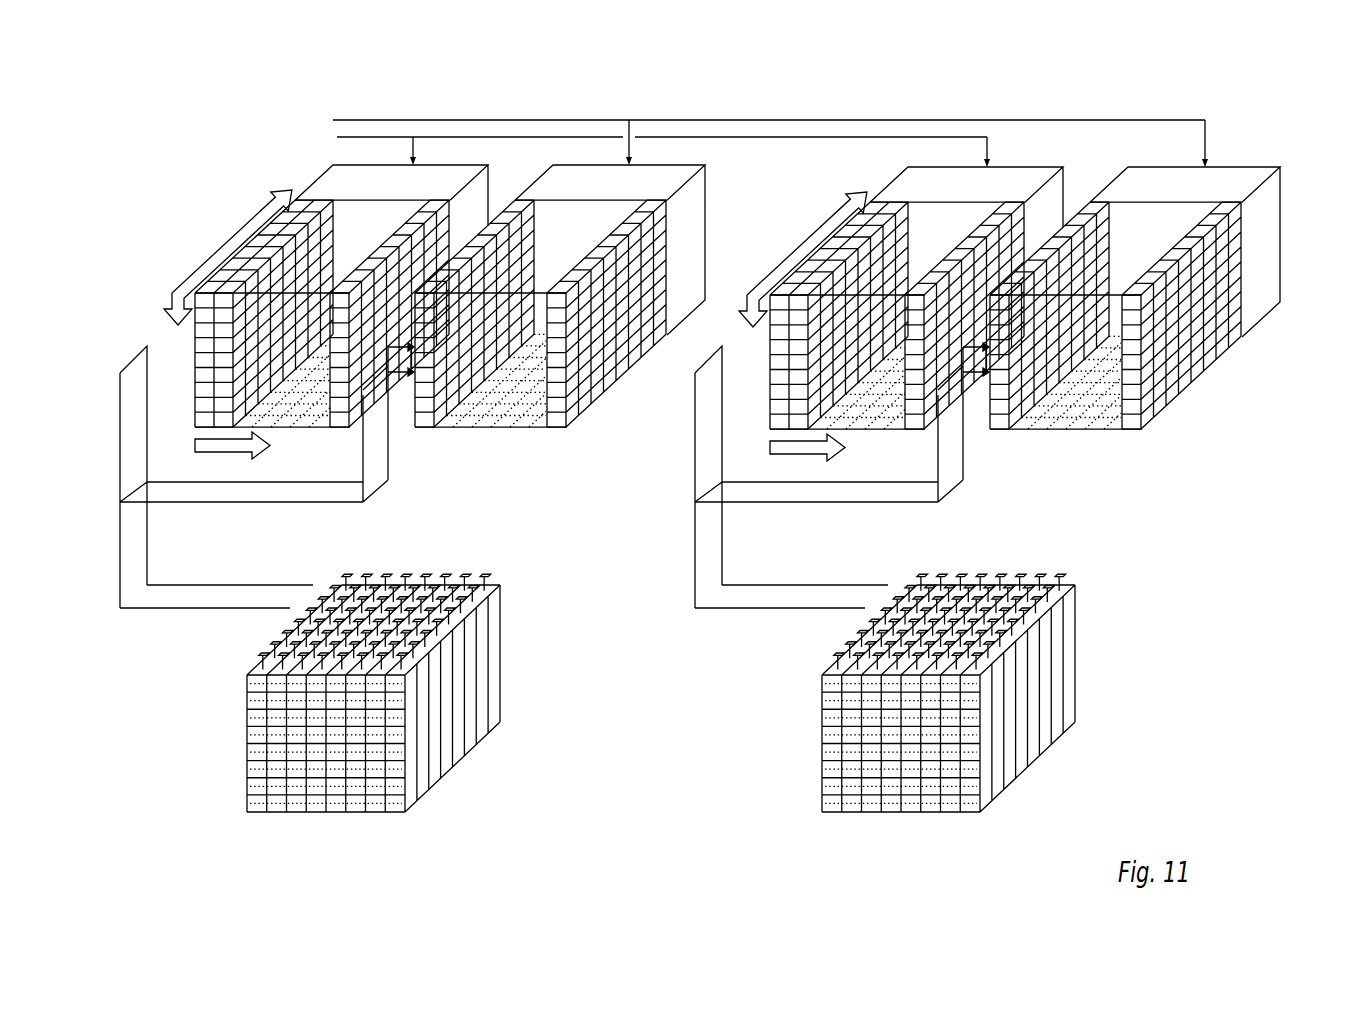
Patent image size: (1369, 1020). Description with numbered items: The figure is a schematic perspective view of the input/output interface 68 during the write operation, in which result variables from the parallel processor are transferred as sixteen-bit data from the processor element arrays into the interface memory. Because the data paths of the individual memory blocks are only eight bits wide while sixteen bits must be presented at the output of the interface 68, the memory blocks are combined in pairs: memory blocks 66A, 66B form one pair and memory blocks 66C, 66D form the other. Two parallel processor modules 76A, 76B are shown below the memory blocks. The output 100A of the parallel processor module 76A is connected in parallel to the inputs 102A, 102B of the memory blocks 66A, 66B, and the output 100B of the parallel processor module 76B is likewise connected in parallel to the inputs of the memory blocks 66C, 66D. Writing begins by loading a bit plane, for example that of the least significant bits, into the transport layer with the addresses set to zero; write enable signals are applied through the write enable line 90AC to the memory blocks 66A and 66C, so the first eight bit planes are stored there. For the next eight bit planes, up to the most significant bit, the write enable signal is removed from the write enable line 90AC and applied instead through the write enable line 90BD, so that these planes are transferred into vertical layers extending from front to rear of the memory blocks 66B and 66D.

The input/output interface 68 is at (738, 100).
The write enable line 90AC is at (464, 138).
The write enable line 90BD is at (797, 120).
The memory block 66A is at (331, 182).
The memory block 66B is at (566, 188).
The memory block 66C is at (942, 182).
The memory block 66D is at (1153, 222).
The input of memory block 102A is at (129, 430).
The input of memory block 102B is at (378, 447).
The output of parallel processor module 100A is at (217, 599).
The output of parallel processor module 100B is at (792, 599).
The parallel processor module 76A is at (342, 828).
The parallel processor module 76B is at (835, 818).